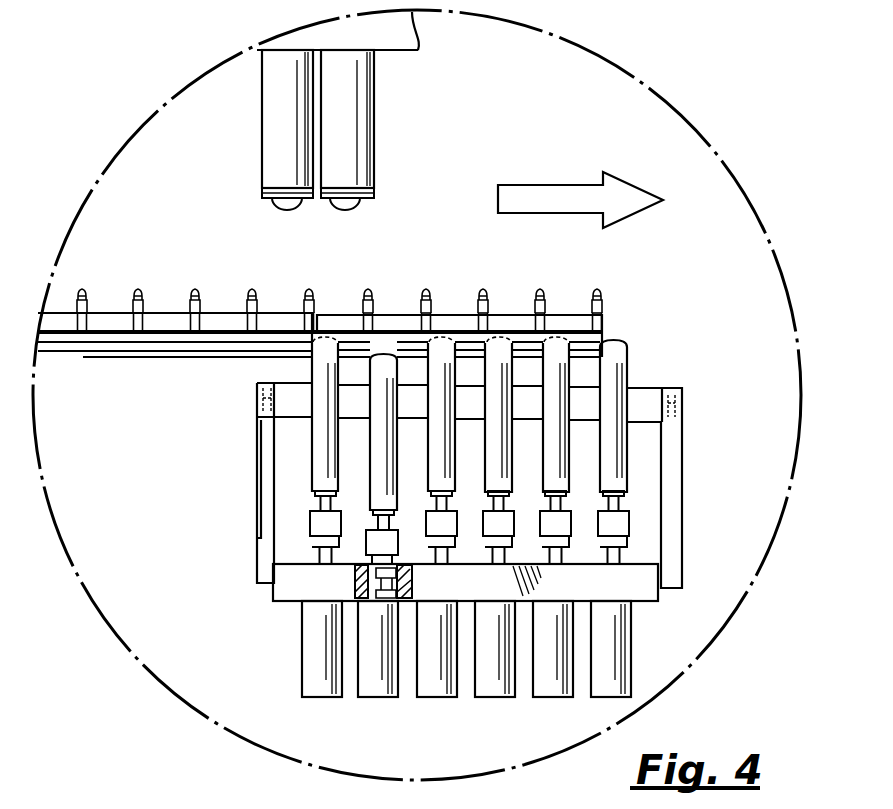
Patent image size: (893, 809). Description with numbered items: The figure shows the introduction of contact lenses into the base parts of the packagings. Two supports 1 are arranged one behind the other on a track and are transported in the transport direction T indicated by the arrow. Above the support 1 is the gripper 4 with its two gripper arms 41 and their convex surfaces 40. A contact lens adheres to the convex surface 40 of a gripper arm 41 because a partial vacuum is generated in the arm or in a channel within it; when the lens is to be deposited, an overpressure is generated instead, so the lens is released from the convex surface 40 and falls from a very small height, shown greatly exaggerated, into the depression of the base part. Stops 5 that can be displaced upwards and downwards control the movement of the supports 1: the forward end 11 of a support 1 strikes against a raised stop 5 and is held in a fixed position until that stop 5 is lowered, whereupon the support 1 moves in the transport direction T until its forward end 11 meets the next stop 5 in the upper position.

The support 1 is at (353, 310).
The forward end 11 is at (603, 330).
The gripper 4 is at (300, 144).
The convex surface 40 is at (357, 213).
The gripper arm 41 is at (360, 162).
The stop 5 is at (316, 452).
The transport direction T is at (547, 190).